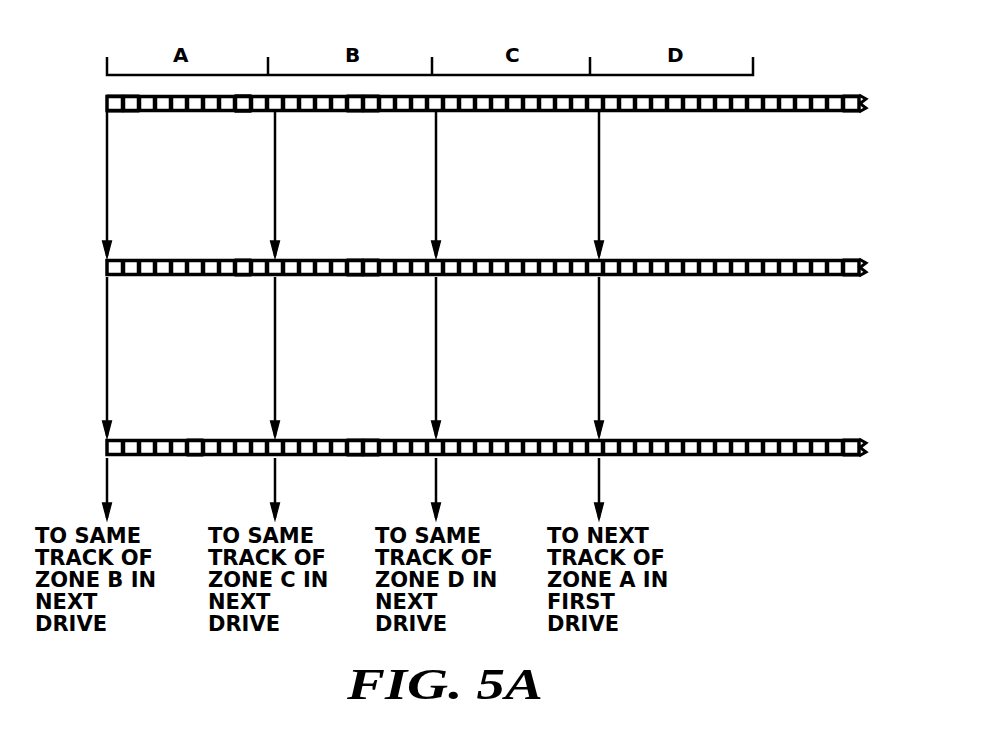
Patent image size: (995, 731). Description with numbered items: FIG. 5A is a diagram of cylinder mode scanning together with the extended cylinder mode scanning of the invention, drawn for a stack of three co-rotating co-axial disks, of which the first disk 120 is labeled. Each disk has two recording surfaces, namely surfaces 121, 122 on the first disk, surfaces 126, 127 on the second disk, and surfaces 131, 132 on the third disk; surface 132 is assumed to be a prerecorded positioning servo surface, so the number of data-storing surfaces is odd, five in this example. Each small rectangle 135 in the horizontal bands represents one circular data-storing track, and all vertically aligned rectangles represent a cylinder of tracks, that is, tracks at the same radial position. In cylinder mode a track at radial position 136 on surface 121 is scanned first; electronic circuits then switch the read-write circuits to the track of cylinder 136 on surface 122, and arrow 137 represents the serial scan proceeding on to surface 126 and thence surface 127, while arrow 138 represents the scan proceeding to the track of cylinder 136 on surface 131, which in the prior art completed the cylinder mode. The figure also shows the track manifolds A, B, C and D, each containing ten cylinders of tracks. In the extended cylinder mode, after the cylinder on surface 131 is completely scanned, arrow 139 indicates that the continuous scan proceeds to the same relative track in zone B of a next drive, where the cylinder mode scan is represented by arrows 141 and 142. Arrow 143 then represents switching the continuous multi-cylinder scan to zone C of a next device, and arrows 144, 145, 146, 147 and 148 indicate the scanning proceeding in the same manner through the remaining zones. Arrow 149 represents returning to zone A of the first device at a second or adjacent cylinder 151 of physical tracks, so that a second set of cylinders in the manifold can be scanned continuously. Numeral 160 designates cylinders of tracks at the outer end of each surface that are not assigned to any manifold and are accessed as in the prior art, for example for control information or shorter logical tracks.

The disk 120 is at (107, 103).
The recording surface 121 is at (243, 96).
The recording surface 122 is at (243, 112).
The recording surface 126 is at (243, 258).
The recording surface 127 is at (240, 278).
The recording surface 131 is at (222, 439).
The recording surface 132 is at (190, 459).
The small rectangle 135 is at (372, 112).
The radial position 136 is at (120, 96).
The arrow 137 is at (107, 198).
The arrow 138 is at (107, 366).
The arrow 139 is at (107, 472).
The arrow 141 is at (275, 198).
The arrow 142 is at (275, 366).
The arrow 143 is at (275, 472).
The arrow 144 is at (436, 198).
The arrow 145 is at (436, 366).
The arrow 146 is at (436, 472).
The arrow 147 is at (599, 198).
The arrow 148 is at (599, 366).
The arrow 149 is at (599, 472).
The adjacent cylinder 151 is at (134, 96).
The cylinders of tracks 160 is at (827, 113).